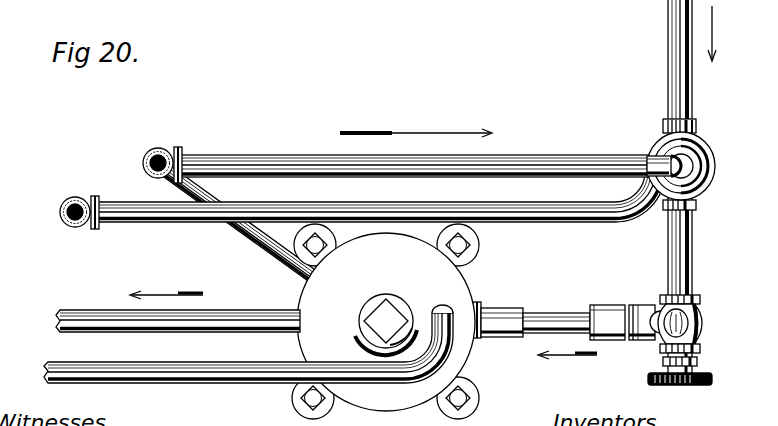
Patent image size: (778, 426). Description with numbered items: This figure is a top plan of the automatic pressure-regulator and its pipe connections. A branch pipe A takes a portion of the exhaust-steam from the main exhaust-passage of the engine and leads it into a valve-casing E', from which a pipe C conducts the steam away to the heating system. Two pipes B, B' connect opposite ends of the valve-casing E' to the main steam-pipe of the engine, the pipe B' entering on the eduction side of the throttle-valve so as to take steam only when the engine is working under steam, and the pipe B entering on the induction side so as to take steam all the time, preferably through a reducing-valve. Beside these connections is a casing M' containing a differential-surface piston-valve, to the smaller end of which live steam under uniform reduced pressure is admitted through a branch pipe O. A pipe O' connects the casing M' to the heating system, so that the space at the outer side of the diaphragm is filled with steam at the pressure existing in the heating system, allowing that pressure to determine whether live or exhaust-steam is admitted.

The branch pipe A is at (664, 60).
The pipe B is at (404, 158).
The pipe B' is at (362, 206).
The pipe C is at (668, 272).
The valve-casing E' is at (691, 166).
The casing M' is at (385, 321).
The branch pipe O is at (245, 227).
The pipe O' is at (248, 347).